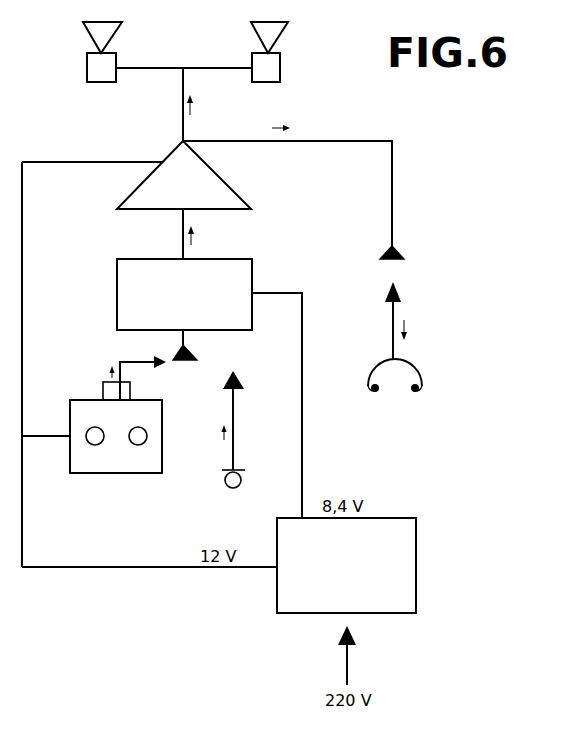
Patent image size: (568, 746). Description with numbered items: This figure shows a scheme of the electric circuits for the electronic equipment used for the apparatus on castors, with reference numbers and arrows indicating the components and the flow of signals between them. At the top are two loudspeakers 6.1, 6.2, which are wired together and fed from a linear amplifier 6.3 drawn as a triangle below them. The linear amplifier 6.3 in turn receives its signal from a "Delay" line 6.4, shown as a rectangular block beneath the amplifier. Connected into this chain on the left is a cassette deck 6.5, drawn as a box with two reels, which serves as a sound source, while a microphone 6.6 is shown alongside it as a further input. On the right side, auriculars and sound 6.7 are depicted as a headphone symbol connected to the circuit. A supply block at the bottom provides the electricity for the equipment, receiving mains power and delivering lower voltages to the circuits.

The loudspeaker 6.1 is at (102, 63).
The loudspeaker 6.2 is at (267, 62).
The linear amplifier 6.3 is at (184, 175).
The delay line 6.4 is at (184, 294).
The cassette deck 6.5 is at (116, 427).
The microphone 6.6 is at (230, 442).
The auriculars and sound 6.7 is at (395, 348).